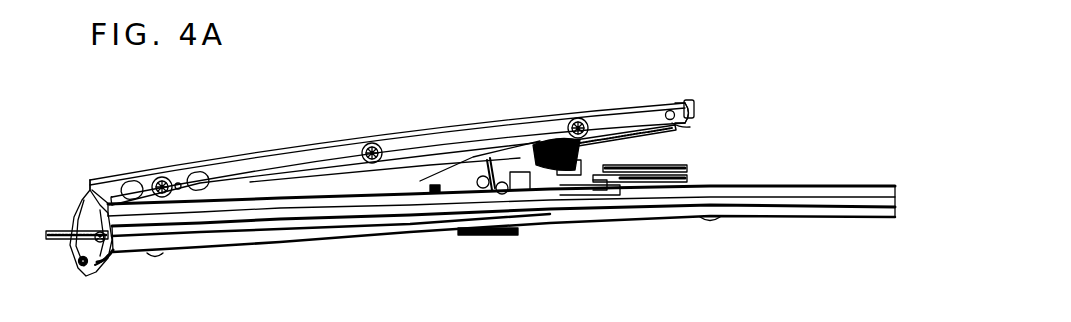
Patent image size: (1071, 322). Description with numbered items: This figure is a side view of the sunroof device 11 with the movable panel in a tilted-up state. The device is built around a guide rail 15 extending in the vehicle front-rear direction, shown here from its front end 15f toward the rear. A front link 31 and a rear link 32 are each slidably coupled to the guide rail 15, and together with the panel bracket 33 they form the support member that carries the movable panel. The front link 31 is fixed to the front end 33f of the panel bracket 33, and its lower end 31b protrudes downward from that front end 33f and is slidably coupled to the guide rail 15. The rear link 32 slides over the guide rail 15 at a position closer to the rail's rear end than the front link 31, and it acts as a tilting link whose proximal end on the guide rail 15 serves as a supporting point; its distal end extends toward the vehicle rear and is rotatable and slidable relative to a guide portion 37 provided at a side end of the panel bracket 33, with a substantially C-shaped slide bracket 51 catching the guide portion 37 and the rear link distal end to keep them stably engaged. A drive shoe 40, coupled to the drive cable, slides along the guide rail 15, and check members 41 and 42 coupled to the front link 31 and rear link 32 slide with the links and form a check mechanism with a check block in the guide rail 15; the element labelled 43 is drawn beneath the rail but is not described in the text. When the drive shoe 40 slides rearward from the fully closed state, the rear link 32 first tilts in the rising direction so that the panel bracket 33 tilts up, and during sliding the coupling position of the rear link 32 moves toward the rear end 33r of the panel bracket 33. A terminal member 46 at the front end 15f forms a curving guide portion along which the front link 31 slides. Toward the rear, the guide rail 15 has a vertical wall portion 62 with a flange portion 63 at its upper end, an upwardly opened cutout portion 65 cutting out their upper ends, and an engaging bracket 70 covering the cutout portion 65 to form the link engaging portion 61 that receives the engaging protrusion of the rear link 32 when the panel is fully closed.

The sunroof device 11 is at (78, 120).
The guide rail 15 is at (893, 185).
The front end of guide rail 15f is at (117, 262).
The front link 31 is at (78, 205).
The lower end of front link 31b is at (80, 268).
The panel bracket 33 is at (385, 134).
The front end of panel bracket 33f is at (97, 180).
The rear end of panel bracket 33r is at (669, 103).
The guide portion 37 is at (695, 105).
The drive shoe 40 is at (258, 184).
The check member 41 is at (103, 270).
The check member 42 is at (405, 178).
The shoe 43 is at (480, 236).
The terminal member 46 is at (58, 258).
The slide bracket 51 is at (692, 127).
The link engaging portion 61 is at (592, 164).
The vertical wall portion 62 is at (690, 176).
The flange portion 63 is at (658, 162).
The cutout portion 65 is at (594, 182).
The engaging bracket 70 is at (620, 134).
The rear link 32 is at (535, 140).